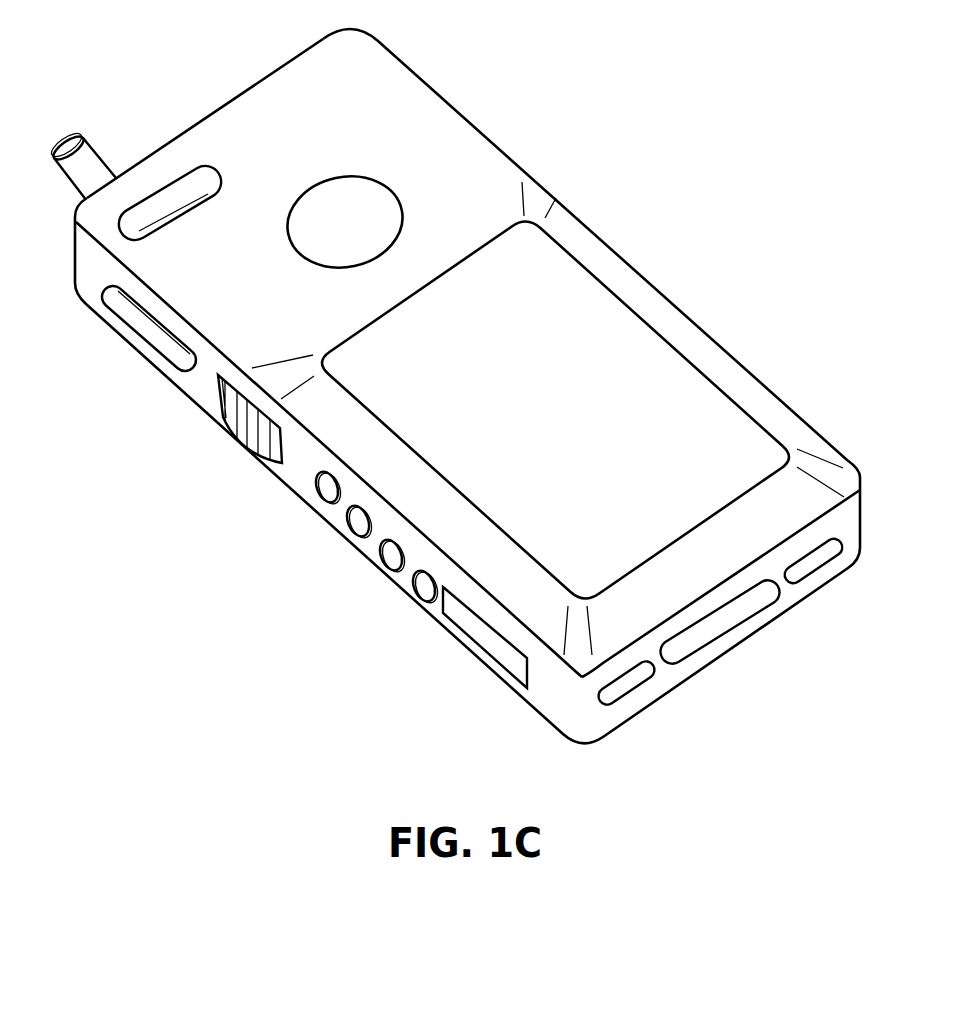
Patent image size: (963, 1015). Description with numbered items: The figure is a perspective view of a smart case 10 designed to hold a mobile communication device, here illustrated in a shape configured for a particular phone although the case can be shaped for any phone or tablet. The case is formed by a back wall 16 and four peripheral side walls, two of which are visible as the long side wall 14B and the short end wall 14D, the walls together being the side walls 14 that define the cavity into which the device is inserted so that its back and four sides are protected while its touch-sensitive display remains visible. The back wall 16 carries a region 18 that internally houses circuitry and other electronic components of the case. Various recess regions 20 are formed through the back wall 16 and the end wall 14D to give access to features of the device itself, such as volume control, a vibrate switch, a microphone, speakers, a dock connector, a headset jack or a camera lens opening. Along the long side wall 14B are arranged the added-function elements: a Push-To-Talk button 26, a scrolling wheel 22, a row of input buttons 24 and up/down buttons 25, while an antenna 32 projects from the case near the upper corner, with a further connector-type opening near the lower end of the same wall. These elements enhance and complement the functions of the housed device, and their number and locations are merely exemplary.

The smart case 10 is at (237, 653).
The peripheral side wall 14 is at (540, 700).
The peripheral side wall 14B is at (248, 93).
The peripheral side wall 14D is at (697, 663).
The back wall 16 is at (415, 110).
The region 18 is at (556, 426).
The recess regions 20 is at (147, 228).
The scrolling wheel 22 is at (242, 430).
The input buttons 24 is at (355, 522).
The up/down buttons 25 is at (420, 587).
The Push-To-Talk (PTT) button 26 is at (158, 335).
The antenna 32 is at (83, 158).